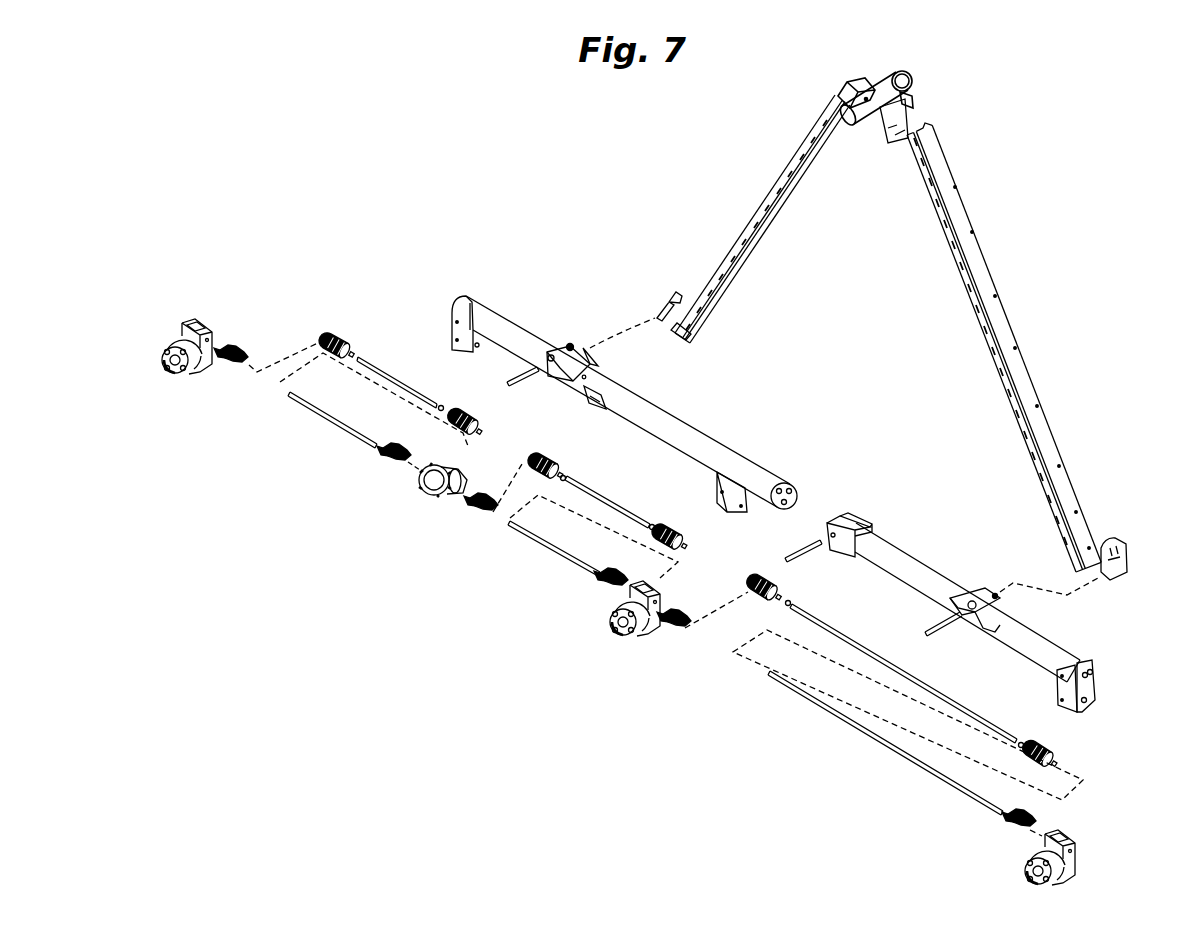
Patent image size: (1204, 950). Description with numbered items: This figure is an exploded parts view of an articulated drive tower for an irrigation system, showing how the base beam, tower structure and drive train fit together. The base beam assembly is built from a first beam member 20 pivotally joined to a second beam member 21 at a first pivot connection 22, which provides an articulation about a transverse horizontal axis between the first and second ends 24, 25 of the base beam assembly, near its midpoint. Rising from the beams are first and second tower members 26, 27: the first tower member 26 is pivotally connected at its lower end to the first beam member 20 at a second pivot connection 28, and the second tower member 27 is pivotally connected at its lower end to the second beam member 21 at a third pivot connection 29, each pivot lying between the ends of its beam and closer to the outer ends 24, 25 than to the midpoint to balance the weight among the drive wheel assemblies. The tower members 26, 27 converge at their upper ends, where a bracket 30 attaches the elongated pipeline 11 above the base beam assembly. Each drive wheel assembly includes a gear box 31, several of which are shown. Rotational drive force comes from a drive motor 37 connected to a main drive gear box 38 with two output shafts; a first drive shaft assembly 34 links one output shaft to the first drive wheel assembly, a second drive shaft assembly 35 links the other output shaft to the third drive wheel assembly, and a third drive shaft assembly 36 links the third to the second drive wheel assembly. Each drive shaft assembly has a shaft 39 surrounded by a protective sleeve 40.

The elongated pipeline 11 is at (912, 89).
The first beam member 20 is at (712, 440).
The second beam member 21 is at (900, 562).
The first pivot connection 22 is at (845, 520).
The first end 24 is at (467, 297).
The second end 25 is at (1092, 665).
The first tower member 26 is at (783, 170).
The second tower member 27 is at (965, 233).
The second pivot connection 28 is at (565, 345).
The third pivot connection 29 is at (983, 592).
The bracket 30 is at (888, 136).
The gear box 31 is at (197, 372).
The first drive shaft assembly 34 is at (320, 412).
The second drive shaft assembly 35 is at (548, 548).
The third drive shaft assembly 36 is at (877, 742).
The drive motor 37 is at (440, 502).
The main drive gear box 38 is at (418, 482).
The shaft 39 is at (403, 372).
The protective sleeve 40 is at (336, 336).